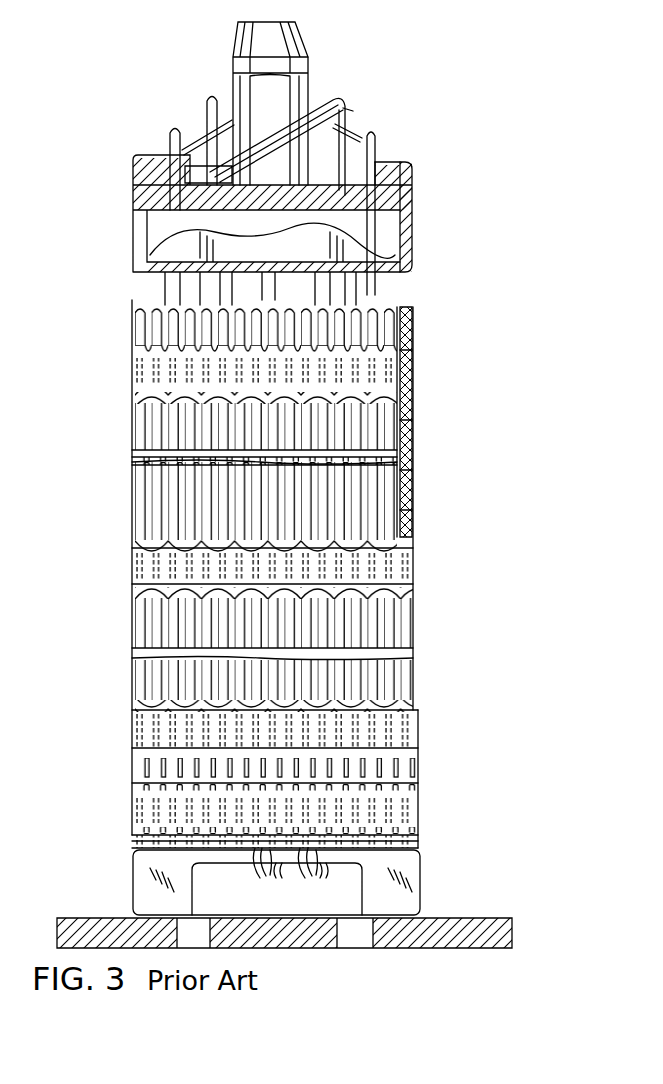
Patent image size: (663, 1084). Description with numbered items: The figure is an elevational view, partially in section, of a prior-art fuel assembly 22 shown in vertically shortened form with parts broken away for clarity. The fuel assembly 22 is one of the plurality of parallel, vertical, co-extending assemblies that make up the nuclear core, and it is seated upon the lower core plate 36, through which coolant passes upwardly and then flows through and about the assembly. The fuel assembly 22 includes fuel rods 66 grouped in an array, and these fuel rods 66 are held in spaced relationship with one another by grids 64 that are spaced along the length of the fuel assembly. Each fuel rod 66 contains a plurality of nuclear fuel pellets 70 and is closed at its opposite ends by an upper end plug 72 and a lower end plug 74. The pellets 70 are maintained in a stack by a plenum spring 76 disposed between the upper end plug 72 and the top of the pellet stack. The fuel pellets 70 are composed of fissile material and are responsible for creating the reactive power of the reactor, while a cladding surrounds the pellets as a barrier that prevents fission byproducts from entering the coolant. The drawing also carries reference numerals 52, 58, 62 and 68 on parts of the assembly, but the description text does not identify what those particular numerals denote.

The fuel assembly 22 is at (485, 198).
The lower core plate 36 is at (448, 918).
The pins / terminals 52 is at (197, 132).
The base connector 58 is at (429, 873).
The head cap 62 is at (421, 186).
The grids 64 is at (131, 378).
The fuel rods 66 is at (133, 503).
The conductor 68 is at (282, 875).
The nuclear fuel pellets 70 is at (413, 430).
The upper end plug 72 is at (413, 313).
The lower end plug 74 is at (323, 878).
The plenum spring 76 is at (413, 358).